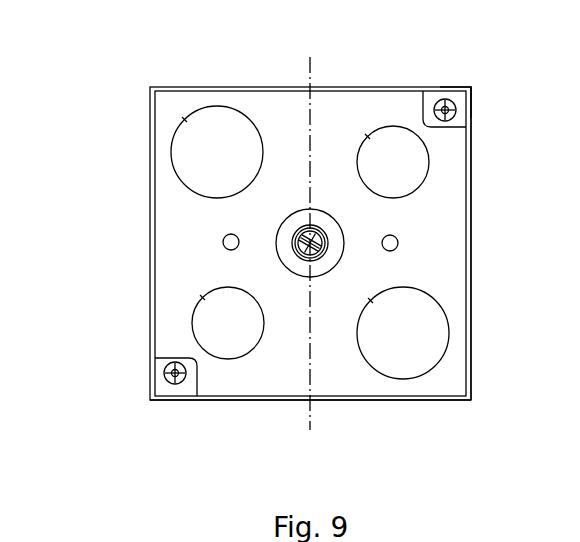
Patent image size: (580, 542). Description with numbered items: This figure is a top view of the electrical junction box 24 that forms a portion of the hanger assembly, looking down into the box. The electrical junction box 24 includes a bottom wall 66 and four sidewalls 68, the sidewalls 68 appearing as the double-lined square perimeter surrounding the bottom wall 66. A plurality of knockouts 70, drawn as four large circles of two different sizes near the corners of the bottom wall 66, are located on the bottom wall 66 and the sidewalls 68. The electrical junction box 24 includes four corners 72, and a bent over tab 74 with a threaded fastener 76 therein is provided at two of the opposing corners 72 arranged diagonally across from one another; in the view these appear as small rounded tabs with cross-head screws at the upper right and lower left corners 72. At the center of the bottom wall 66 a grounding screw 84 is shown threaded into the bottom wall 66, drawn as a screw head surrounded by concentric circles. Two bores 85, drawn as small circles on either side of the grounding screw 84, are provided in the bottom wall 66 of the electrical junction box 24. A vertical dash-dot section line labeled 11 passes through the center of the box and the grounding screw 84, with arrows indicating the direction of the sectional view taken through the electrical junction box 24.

The electrical junction box 24 is at (96, 108).
The bottom wall 66 is at (360, 207).
The sidewalls 68 is at (472, 243).
The knockouts 70 is at (412, 165).
The corners 72 is at (472, 87).
The bent over tab 74 is at (434, 95).
The threaded fastener 76 is at (452, 118).
The grounding screw 84 is at (322, 250).
The bores 85 is at (224, 240).
The section line 11- 11 is at (310, 57).